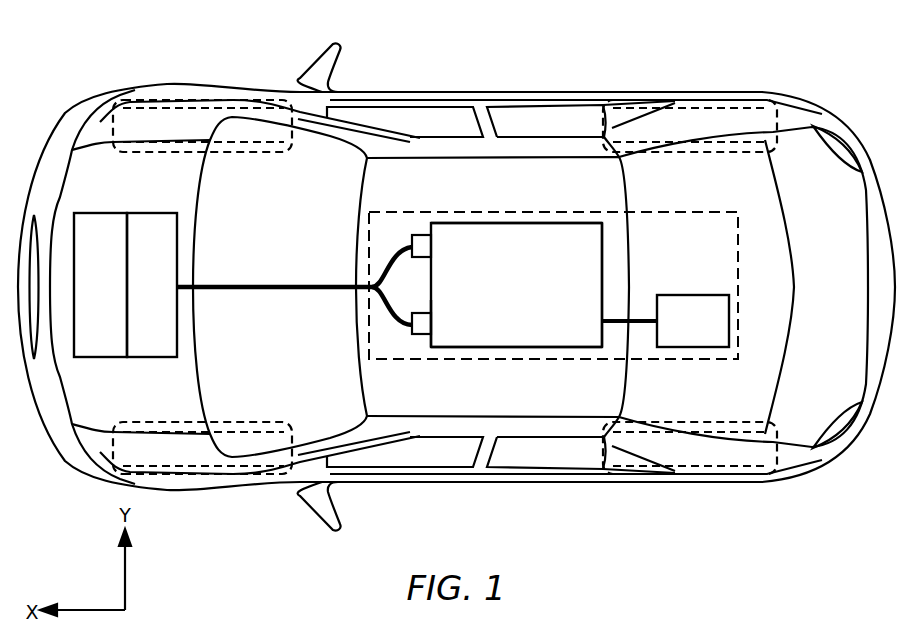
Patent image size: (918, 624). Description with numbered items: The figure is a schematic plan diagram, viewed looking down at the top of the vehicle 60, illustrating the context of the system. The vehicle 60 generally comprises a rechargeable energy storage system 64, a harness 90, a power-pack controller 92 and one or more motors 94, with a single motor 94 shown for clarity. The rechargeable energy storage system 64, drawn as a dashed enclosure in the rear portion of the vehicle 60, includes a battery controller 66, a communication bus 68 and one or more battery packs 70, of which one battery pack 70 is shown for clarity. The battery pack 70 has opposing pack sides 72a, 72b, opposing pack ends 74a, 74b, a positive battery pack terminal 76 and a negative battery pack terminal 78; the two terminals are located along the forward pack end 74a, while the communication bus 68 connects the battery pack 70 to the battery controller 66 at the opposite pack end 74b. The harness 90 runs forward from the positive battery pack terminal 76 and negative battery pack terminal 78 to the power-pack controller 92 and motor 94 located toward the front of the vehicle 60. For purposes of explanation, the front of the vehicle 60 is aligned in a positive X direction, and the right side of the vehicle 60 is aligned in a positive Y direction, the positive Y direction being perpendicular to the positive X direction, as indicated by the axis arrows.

The vehicle 60 is at (419, 90).
The rechargeable energy storage system 64 is at (672, 211).
The battery controller 66 is at (679, 332).
The communication bus 68 is at (637, 323).
The battery pack 70 is at (503, 298).
The pack side 72a is at (515, 223).
The pack side 72b is at (512, 348).
The pack end 74a is at (425, 342).
The pack end 74b is at (604, 284).
The positive battery pack terminal 76 is at (421, 234).
The negative battery pack terminal 78 is at (415, 334).
The harness 90 is at (305, 286).
The power-pack controller 92 is at (138, 295).
The motor 94 is at (86, 295).